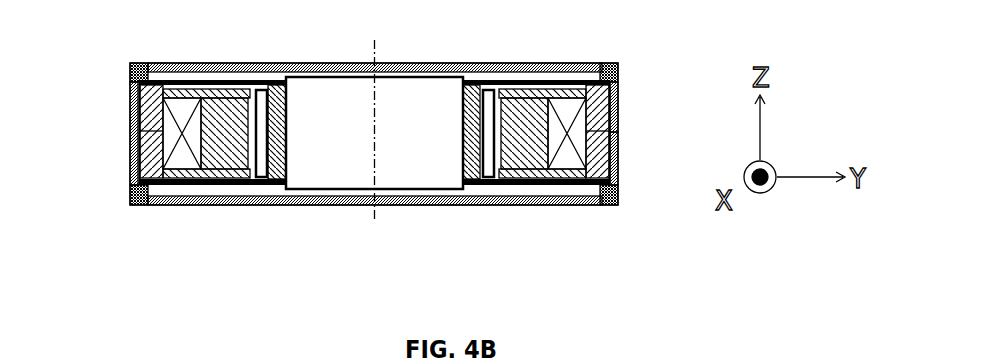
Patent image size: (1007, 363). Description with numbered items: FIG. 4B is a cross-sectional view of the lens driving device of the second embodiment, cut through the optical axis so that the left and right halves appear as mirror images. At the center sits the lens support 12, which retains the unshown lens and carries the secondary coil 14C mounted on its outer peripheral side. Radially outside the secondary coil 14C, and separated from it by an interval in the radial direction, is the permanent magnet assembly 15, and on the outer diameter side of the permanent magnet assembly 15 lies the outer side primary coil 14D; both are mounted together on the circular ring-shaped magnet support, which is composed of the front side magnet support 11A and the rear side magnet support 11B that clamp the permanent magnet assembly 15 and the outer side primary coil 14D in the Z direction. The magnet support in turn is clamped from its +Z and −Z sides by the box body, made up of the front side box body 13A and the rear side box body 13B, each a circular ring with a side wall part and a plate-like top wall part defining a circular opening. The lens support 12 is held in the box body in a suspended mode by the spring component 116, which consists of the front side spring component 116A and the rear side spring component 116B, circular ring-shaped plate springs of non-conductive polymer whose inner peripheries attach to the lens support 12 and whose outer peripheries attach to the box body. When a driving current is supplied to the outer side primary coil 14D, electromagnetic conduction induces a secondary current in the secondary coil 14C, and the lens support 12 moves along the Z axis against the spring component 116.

The front side magnet support 11A is at (618, 97).
The rear side magnet support 11B is at (620, 150).
The lens support 12 is at (465, 133).
The front side box body 13A is at (130, 88).
The rear side box body 13B is at (130, 170).
The secondary coil 14C is at (490, 88).
The outer side primary coil 14D is at (130, 118).
The permanent magnet assembly 15 is at (234, 90).
The spring component 116 is at (552, 196).
The front side spring component 116A is at (588, 187).
The rear side spring component 116B is at (515, 187).